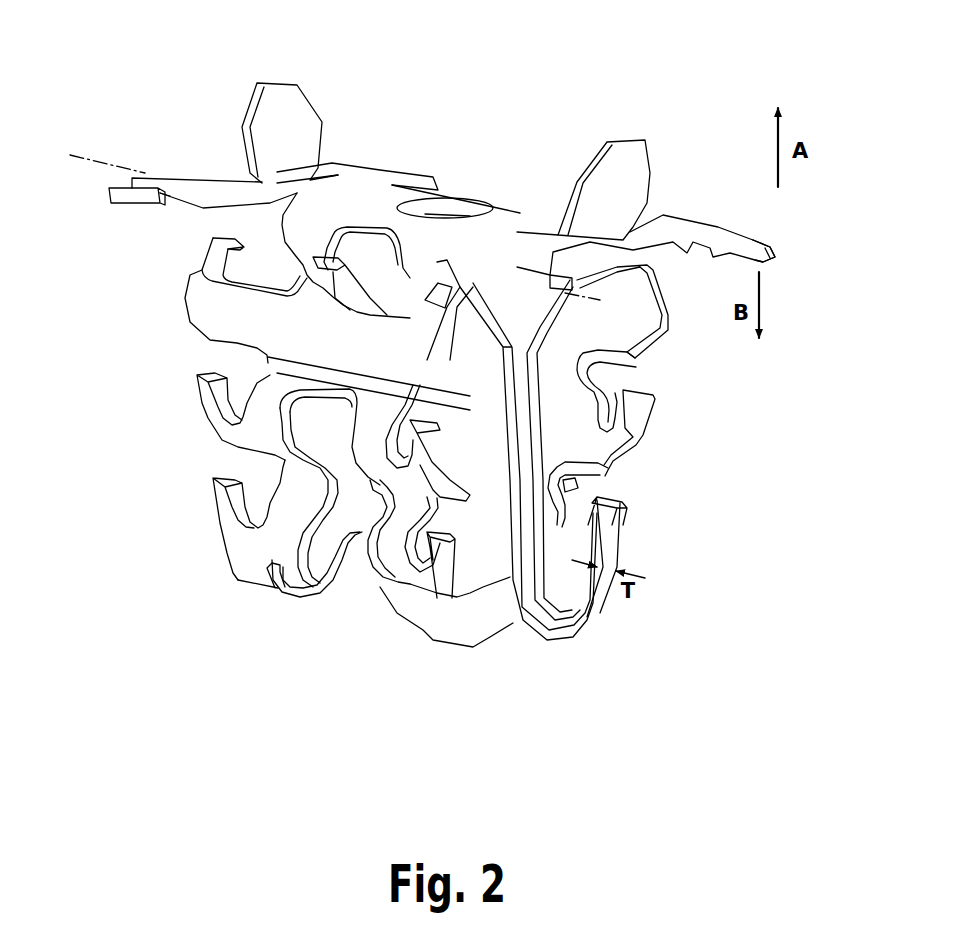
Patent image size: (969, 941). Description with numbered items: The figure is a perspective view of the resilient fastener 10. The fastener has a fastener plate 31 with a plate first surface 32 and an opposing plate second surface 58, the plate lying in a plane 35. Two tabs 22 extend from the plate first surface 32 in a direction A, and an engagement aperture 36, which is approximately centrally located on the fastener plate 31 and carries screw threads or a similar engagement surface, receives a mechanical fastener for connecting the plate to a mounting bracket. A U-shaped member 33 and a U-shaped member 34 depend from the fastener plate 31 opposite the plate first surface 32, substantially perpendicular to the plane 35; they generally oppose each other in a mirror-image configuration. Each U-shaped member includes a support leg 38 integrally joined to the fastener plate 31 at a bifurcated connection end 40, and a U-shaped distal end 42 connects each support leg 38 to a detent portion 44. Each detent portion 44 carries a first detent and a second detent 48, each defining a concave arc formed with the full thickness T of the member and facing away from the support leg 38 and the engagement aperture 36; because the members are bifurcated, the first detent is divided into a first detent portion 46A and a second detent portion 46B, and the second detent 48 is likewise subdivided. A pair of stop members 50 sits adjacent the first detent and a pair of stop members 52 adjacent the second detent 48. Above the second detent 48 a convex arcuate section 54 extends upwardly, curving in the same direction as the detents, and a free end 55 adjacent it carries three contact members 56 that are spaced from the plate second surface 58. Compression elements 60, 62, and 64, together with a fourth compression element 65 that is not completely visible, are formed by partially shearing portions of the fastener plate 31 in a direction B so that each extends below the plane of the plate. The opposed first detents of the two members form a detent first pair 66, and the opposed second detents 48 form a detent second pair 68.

The resilient fastener 10 is at (147, 92).
The tabs 22 is at (258, 108).
The fastener plate 31 is at (377, 190).
The plate first surface 32 is at (509, 213).
The U-shaped member 33 is at (505, 638).
The U-shaped member 34 is at (587, 612).
The plane 35 is at (110, 160).
The engagement aperture 36 is at (452, 205).
The support leg 38 is at (542, 462).
The connection end 40 is at (313, 228).
The U-shaped distal end 42 is at (303, 597).
The detent portion 44 is at (262, 555).
The first detent portion 46A is at (320, 398).
The second detent portion 46B is at (405, 500).
The second detent 48 is at (268, 359).
The stop members 50 is at (230, 502).
The stop members 52 is at (204, 388).
The convex arcuate section 54 is at (198, 315).
The free end 55 is at (210, 275).
The contact members 56 is at (430, 298).
The plate second surface 58 is at (163, 206).
The compression element 60 is at (109, 193).
The compression element 62 is at (775, 250).
The compression element 64 is at (565, 305).
The fourth compression element 65 is at (382, 170).
The detent first pair 66 is at (595, 498).
The detent second pair 68 is at (580, 368).